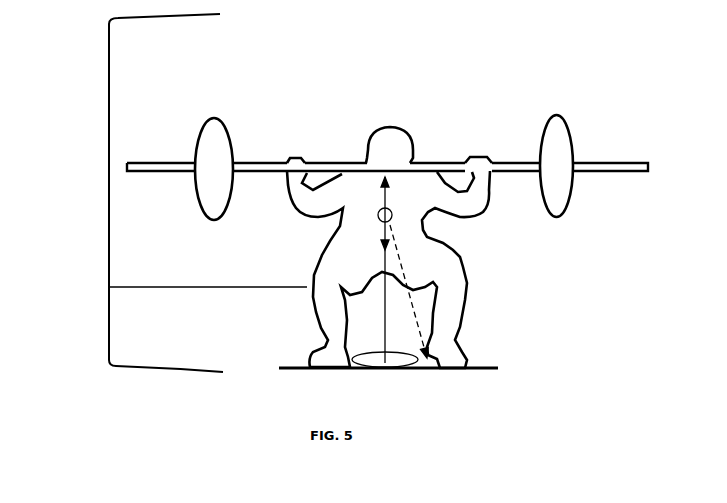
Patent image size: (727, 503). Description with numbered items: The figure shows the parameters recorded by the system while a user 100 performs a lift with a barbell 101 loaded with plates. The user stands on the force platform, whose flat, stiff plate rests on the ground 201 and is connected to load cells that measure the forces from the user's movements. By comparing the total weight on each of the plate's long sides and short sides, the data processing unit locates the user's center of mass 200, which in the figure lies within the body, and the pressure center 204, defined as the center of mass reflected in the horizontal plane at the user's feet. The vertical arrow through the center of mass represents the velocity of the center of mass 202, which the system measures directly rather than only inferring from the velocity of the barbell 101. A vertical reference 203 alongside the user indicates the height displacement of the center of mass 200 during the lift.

The user performing squat 100 is at (413, 133).
The barbell 101 is at (570, 113).
The center of mass 200 is at (395, 215).
The ground surface 201 is at (513, 369).
The velocity of the center of mass 202 is at (376, 182).
The vertical reference height 203 is at (107, 286).
The pressure center 204 is at (425, 357).